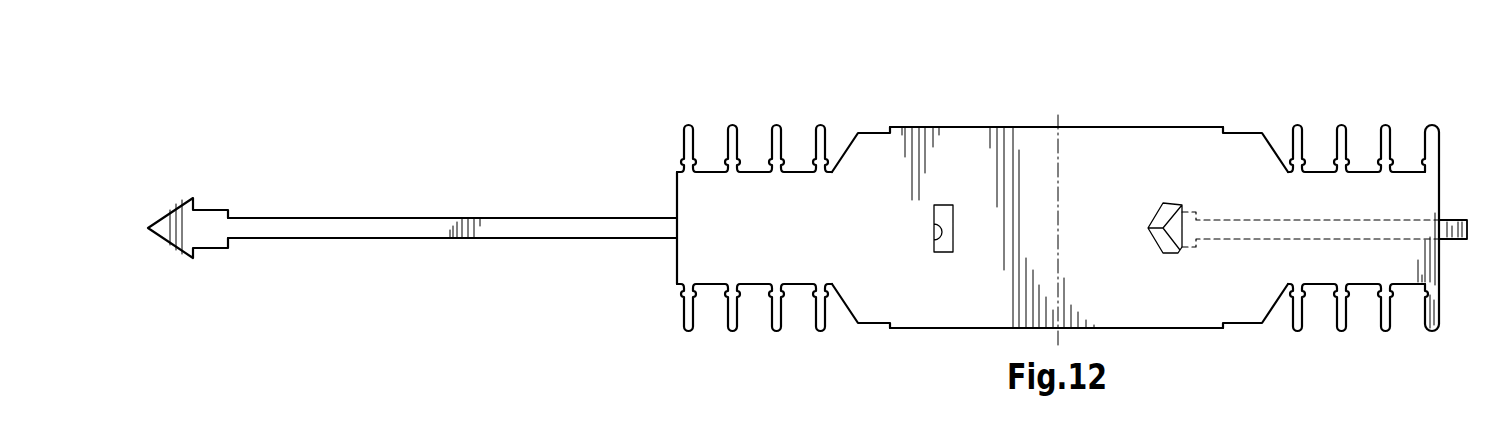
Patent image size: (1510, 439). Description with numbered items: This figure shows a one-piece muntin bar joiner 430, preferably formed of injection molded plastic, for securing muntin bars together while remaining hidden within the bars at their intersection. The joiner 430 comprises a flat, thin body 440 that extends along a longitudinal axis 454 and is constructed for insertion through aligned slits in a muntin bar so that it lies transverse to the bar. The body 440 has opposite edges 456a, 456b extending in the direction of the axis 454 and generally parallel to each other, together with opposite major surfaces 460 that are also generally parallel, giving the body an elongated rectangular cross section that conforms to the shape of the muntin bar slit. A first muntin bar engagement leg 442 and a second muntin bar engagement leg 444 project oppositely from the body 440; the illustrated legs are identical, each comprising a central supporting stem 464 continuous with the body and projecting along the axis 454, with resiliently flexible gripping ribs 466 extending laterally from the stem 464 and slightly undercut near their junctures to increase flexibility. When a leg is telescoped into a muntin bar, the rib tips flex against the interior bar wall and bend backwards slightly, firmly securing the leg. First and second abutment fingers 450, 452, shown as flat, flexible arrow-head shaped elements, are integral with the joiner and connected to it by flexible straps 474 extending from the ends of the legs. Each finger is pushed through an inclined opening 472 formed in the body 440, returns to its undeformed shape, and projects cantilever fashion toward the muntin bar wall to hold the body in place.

The muntin bar joiner 430 is at (1047, 223).
The body 440 is at (930, 302).
The first muntin bar engagement leg 442 is at (709, 209).
The second muntin bar engagement leg 444 is at (1324, 191).
The first abutment finger 450 is at (163, 213).
The second abutment finger 452 is at (1155, 243).
The longitudinal axis 454 is at (318, 232).
The first edge 456a is at (1145, 127).
The second edge 456b is at (1127, 330).
The major surface 460 is at (1120, 179).
The central supporting stem 464 is at (770, 252).
The gripping ribs 466 is at (766, 135).
The opening 472 is at (935, 248).
The flexible strap 474 is at (520, 229).